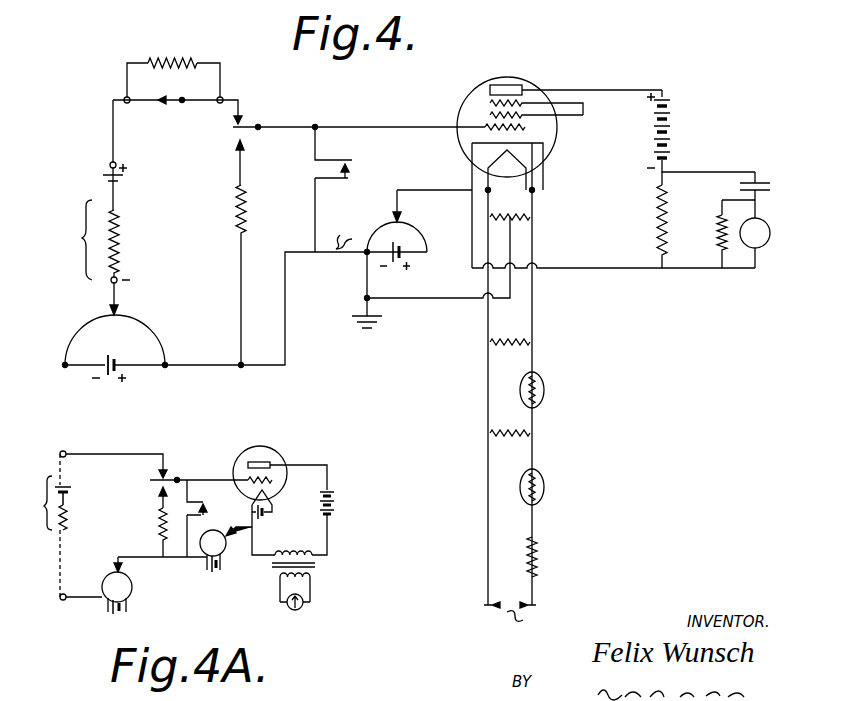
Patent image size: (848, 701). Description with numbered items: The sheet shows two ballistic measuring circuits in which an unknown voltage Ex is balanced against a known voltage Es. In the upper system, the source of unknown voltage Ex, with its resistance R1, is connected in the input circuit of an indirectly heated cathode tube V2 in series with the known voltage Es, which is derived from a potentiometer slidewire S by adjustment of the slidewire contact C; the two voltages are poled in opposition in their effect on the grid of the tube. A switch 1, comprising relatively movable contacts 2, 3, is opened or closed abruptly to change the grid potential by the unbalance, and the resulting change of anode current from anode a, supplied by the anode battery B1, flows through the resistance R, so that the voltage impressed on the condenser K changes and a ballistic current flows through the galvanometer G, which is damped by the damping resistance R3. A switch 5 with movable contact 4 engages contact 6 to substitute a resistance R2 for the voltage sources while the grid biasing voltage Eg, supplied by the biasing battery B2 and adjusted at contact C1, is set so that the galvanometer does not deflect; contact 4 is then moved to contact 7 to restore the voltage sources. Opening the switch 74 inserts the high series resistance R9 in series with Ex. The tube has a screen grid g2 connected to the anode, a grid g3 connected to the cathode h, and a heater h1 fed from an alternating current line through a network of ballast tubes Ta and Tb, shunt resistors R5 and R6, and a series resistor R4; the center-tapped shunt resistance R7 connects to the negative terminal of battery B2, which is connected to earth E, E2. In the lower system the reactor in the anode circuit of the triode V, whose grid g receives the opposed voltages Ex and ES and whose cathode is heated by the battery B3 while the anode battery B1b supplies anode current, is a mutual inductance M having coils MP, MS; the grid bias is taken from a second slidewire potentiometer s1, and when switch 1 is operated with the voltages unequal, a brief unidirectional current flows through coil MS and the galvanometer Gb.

In FIG. 4, the series resistance R9 is at (175, 55).
In FIG. 4, the switch 74 is at (170, 108).
In FIG. 4, the contact 6 is at (234, 126).
In FIG. 4A, the contact 6 is at (160, 475).
In FIG. 4, the movable contact 4 is at (248, 132).
In FIG. 4A, the movable contact 4 is at (182, 478).
In FIG. 4, the switch 5 is at (259, 171).
In FIG. 4, the contact 7 is at (234, 148).
In FIG. 4A, the contact 7 is at (160, 498).
In FIG. 4, the resistance R2 is at (246, 218).
In FIG. 4A, the resistance R2 is at (159, 525).
In FIG. 4, the earth E is at (124, 181).
In FIG. 4A, the earth E is at (74, 490).
In FIG. 4, the resistance R1 is at (120, 240).
In FIG. 4A, the resistance R1 is at (69, 522).
In FIG. 4, the unknown voltage source Ex is at (66, 240).
In FIG. 4A, the unknown voltage source Ex is at (43, 525).
In FIG. 4, the slidewire contact C is at (108, 310).
In FIG. 4, the potentiometer slidewire S is at (162, 340).
In FIG. 4A, the potentiometer slidewire S is at (128, 578).
In FIG. 4, the known voltage Es is at (118, 340).
In FIG. 4, the contact 3 is at (330, 157).
In FIG. 4A, the contact 3 is at (198, 492).
In FIG. 4, the contact 2 is at (322, 180).
In FIG. 4A, the contact 2 is at (192, 517).
In FIG. 4, the switch 1 is at (370, 171).
In FIG. 4A, the switch 1 is at (208, 509).
In FIG. 4, the grid biasing voltage Eg is at (380, 230).
In FIG. 4, the slidewire contact C1 is at (400, 215).
In FIG. 4, the biasing battery B2 is at (402, 266).
In FIG. 4A, the biasing battery B2 is at (213, 574).
In FIG. 4, the earth E2 is at (378, 324).
In FIG. 4, the indirectly heated cathode tube V2 is at (474, 85).
In FIG. 4, the anode a is at (506, 85).
In FIG. 4A, the anode a is at (260, 462).
In FIG. 4, the grid g3 is at (490, 103).
In FIG. 4, the screen grid g2 is at (490, 115).
In FIG. 4, the cathode h is at (550, 135).
In FIG. 4, the heater h1 is at (518, 172).
In FIG. 4, the shunt resistance R7 is at (510, 208).
In FIG. 4, the anode battery B1 is at (701, 131).
In FIG. 4A, the anode battery B1 is at (120, 615).
In FIG. 4, the resistance R is at (657, 226).
In FIG. 4, the condenser K is at (765, 182).
In FIG. 4, the damping resistance R3 is at (717, 228).
In FIG. 4, the galvanometer G is at (755, 234).
In FIG. 4, the shunt resistor R6 is at (524, 358).
In FIG. 4, the ballast tube Ta is at (545, 392).
In FIG. 4, the shunt resistor R5 is at (500, 437).
In FIG. 4, the ballast tube Tb is at (545, 490).
In FIG. 4, the series resistor R4 is at (538, 560).
In FIG. 4A, the known voltage ES is at (112, 568).
In FIG. 4A, the vacuum tube V is at (282, 455).
In FIG. 4A, the grid g is at (248, 492).
In FIG. 4A, the cathode-heating battery B3 is at (272, 516).
In FIG. 4A, the anode battery B1b is at (336, 505).
In FIG. 4A, the second slidewire potentiometer s1 is at (225, 548).
In FIG. 4A, the primary coil MP is at (292, 550).
In FIG. 4A, the mutual inductance M is at (308, 571).
In FIG. 4A, the secondary coil MS is at (286, 588).
In FIG. 4A, the galvanometer Gb is at (302, 607).